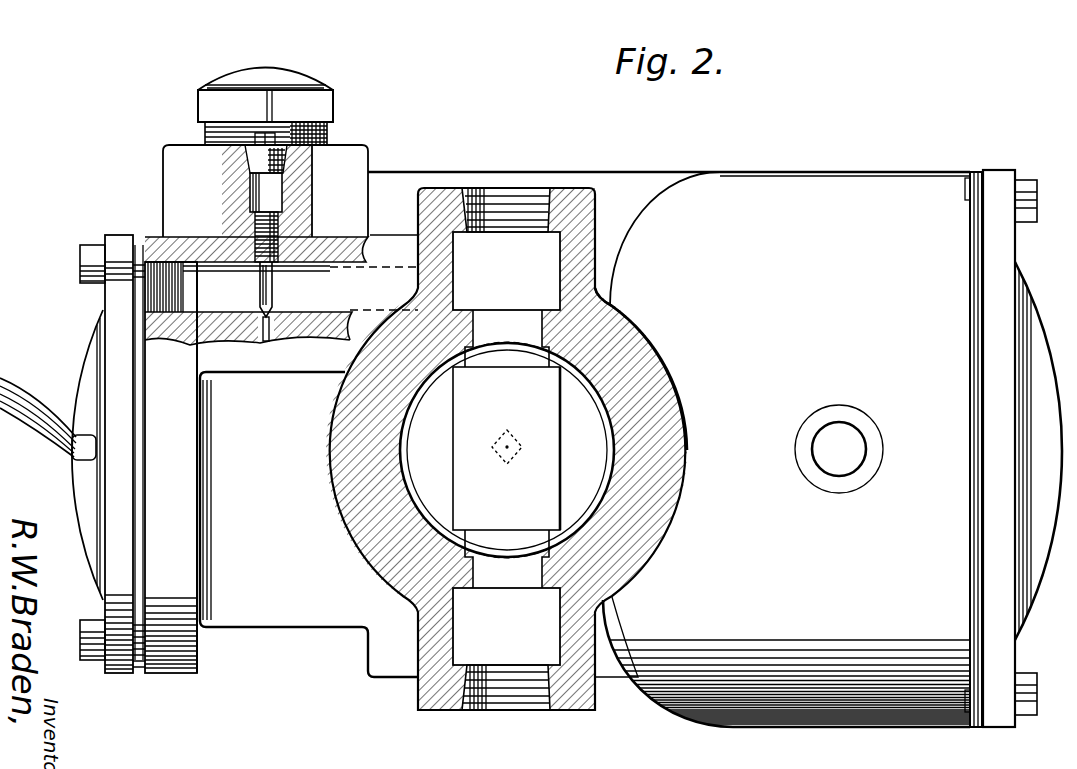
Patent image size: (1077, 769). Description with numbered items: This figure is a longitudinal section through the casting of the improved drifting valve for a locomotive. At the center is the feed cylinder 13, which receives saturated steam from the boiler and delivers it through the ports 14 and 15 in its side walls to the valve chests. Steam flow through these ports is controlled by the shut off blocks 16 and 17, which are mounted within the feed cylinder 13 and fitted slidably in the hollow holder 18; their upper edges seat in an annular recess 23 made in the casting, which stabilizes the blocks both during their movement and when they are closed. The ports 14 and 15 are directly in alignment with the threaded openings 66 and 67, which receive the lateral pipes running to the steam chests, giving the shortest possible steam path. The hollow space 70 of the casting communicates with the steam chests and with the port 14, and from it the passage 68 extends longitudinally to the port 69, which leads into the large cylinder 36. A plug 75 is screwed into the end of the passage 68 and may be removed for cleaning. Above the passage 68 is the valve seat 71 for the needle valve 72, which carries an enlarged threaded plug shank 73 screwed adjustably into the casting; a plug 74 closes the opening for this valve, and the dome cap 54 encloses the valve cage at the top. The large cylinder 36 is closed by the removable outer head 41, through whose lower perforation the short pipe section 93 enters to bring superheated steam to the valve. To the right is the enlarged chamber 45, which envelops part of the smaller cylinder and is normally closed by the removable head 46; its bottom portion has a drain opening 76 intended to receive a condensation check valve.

The feed cylinder 13 is at (585, 410).
The port 14 is at (492, 323).
The port 15 is at (497, 580).
The shut off block 16 is at (613, 310).
The shut off block 17 is at (523, 545).
The hollow holder 18 is at (455, 432).
The annular recess 23 is at (614, 460).
The larger cylinder 36 is at (307, 620).
The outer head 41 is at (88, 527).
The chamber 45 is at (806, 178).
The removable head 46 is at (1010, 307).
The dome cap 54 is at (297, 80).
The threaded opening 66 is at (512, 195).
The threaded opening 67 is at (535, 693).
The passage 68 is at (347, 270).
The port 69 is at (265, 341).
The hollow space 70 is at (528, 260).
The valve seat 71 is at (251, 318).
The needle valve 72 is at (274, 293).
The threaded plug shank 73 is at (337, 213).
The plug 74 is at (318, 147).
The plug 75 is at (152, 287).
The drain opening 76 is at (858, 452).
The short pipe section 93 is at (13, 415).